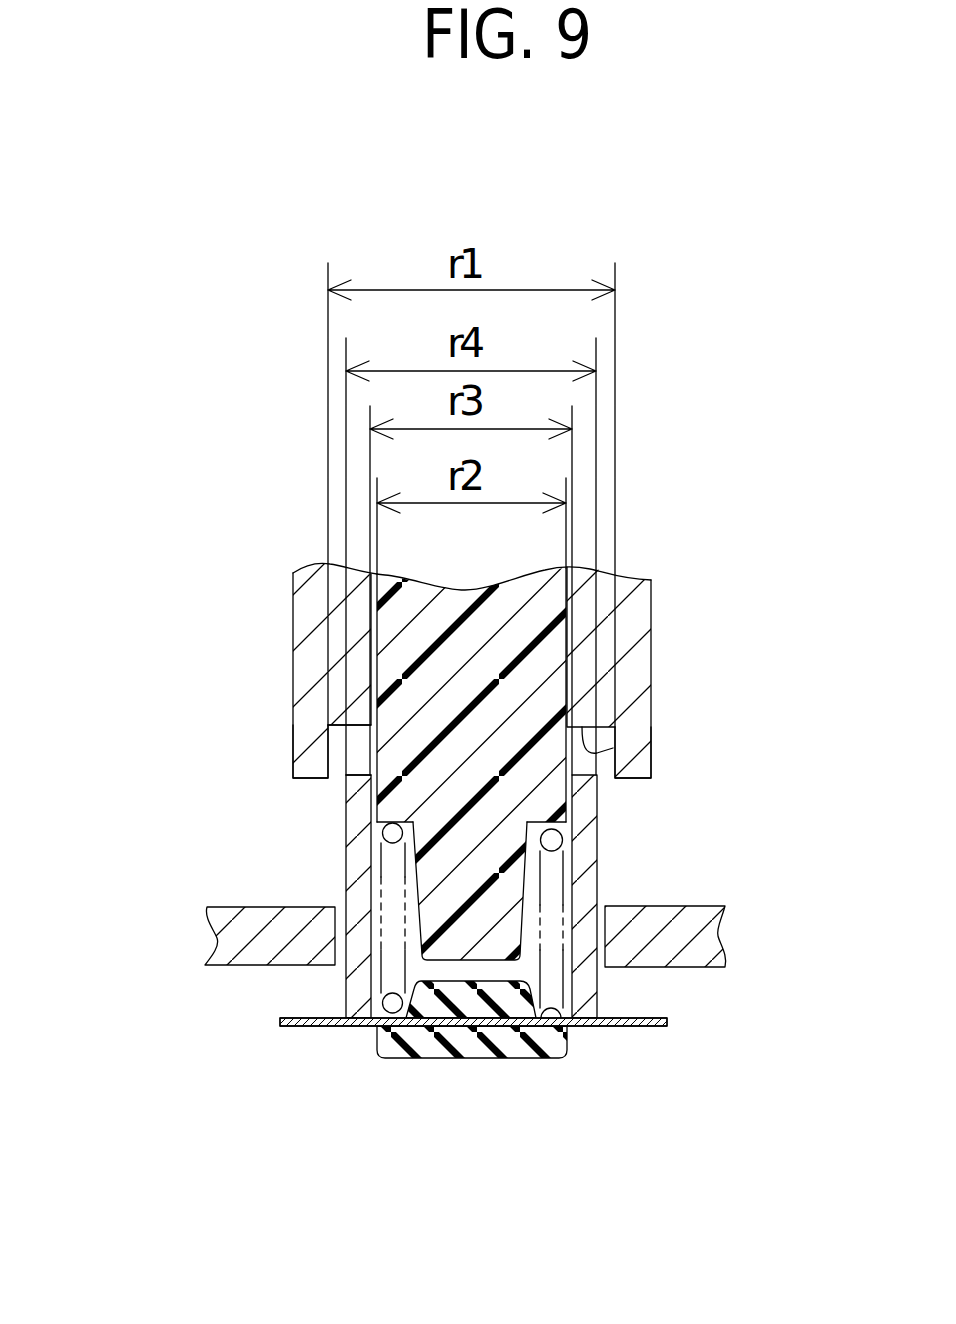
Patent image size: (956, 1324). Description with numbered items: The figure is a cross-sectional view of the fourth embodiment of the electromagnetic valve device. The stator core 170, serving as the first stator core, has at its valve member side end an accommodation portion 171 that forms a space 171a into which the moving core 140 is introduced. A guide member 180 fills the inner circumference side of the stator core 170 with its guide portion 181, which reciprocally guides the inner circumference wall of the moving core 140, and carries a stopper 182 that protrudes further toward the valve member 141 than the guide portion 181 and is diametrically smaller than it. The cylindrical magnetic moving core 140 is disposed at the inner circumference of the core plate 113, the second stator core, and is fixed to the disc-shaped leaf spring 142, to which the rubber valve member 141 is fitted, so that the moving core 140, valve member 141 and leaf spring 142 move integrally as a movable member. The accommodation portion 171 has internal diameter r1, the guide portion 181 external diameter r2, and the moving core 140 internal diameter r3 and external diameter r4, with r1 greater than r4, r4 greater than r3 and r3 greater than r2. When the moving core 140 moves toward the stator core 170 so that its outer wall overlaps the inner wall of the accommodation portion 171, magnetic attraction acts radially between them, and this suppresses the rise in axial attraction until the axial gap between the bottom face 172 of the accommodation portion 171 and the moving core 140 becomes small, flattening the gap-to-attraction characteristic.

The core plate 113 is at (217, 942).
The moving core 140 is at (352, 850).
The valve member 141 is at (517, 1057).
The leaf spring 142 is at (307, 1027).
The stator core 170 is at (632, 592).
The accommodation portion 171 is at (645, 762).
The space 171a is at (353, 742).
The bottom face 172 is at (600, 748).
The guide member 180 is at (428, 667).
The guide portion 181 is at (390, 778).
The stopper 182 is at (500, 897).